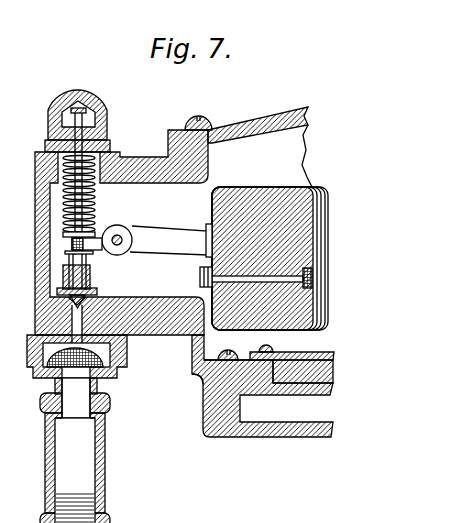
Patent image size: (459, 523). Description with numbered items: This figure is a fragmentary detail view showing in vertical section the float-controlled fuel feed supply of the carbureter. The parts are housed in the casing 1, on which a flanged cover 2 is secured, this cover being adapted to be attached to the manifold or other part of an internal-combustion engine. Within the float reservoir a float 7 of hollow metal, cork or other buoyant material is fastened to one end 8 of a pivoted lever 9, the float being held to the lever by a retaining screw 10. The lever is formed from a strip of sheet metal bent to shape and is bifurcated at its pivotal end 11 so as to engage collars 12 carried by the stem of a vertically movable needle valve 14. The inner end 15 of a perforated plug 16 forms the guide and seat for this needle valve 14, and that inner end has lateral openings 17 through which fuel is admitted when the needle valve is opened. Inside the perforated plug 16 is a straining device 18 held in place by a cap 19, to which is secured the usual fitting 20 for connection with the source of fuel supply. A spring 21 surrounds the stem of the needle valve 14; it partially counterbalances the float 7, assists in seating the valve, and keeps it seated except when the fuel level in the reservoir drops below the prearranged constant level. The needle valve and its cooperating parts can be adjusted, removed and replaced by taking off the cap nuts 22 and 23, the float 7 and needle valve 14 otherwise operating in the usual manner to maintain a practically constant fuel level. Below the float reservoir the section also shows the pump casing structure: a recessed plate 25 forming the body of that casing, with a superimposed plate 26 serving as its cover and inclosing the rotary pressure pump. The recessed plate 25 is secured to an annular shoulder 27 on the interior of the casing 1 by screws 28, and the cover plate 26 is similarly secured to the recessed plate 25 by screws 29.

The casing 1 is at (235, 440).
The flanged cover 2 is at (275, 113).
The float 7 is at (263, 188).
The end of pivoted lever 8 is at (207, 233).
The pivoted lever 9 is at (155, 232).
The retaining screw 10 is at (201, 273).
The pivotal end 11 is at (72, 238).
The collars 12 is at (87, 231).
The needle valve 14 is at (92, 262).
The inner end of perforated plug 15 is at (92, 279).
The perforated plug 16 is at (65, 321).
The lateral openings 17 is at (58, 289).
The straining device 18 is at (114, 378).
The cap 19 is at (33, 372).
The fitting 20 is at (104, 447).
The spring 21 is at (90, 203).
The cap nut 22 is at (101, 105).
The cap nut 23 is at (110, 144).
The recessed plate 25 is at (320, 386).
The superimposed plate 26 is at (321, 351).
The annular shoulder 27 is at (193, 376).
The screws 28 is at (217, 357).
The screws 29 is at (264, 345).